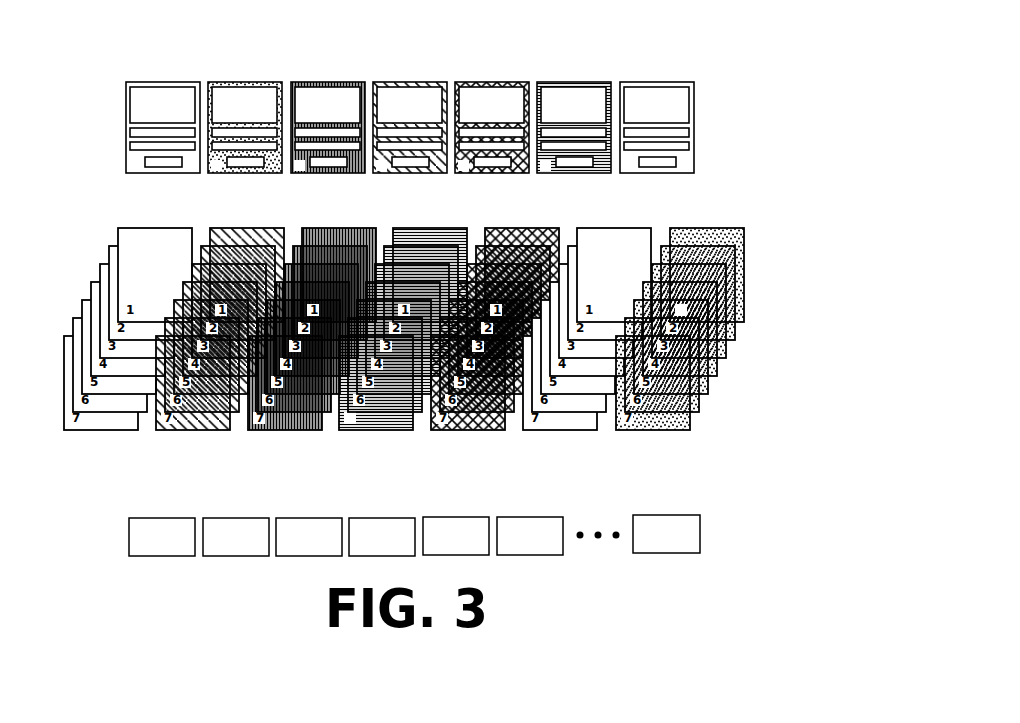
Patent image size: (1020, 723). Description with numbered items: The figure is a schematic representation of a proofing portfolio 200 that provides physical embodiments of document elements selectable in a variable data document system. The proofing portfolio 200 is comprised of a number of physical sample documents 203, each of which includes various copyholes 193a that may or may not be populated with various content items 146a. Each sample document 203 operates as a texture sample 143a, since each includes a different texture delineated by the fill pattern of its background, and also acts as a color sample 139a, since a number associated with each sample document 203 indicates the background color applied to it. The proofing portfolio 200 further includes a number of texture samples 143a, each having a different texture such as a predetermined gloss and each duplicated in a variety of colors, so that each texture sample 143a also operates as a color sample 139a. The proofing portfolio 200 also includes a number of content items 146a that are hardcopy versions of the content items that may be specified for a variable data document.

The proofing portfolio 200 is at (456, 577).
The sample documents 203 is at (493, 52).
The copyholes 193a is at (106, 117).
The color sample 139a is at (350, 432).
The texture sample 143a is at (691, 160).
The content items 146a is at (250, 562).